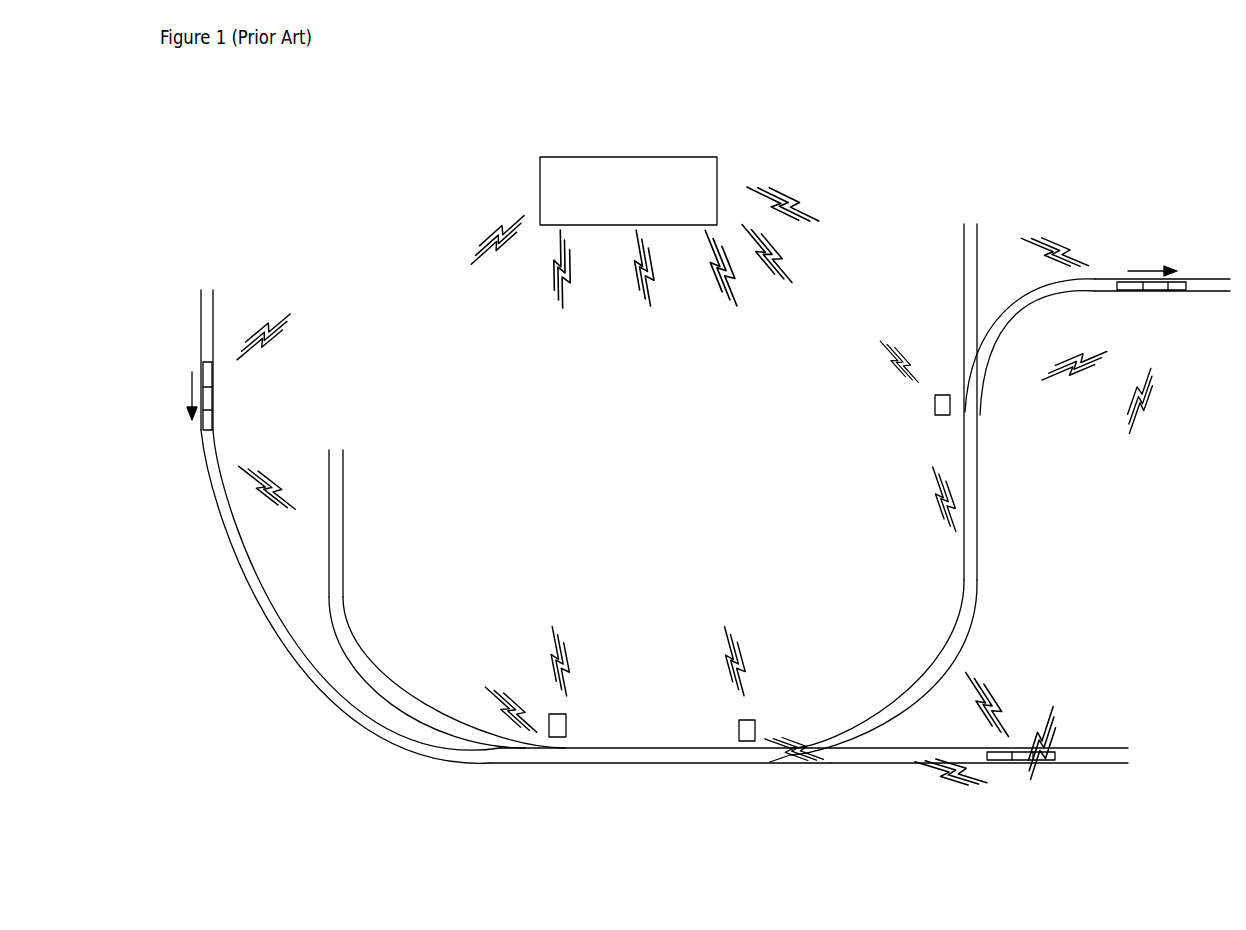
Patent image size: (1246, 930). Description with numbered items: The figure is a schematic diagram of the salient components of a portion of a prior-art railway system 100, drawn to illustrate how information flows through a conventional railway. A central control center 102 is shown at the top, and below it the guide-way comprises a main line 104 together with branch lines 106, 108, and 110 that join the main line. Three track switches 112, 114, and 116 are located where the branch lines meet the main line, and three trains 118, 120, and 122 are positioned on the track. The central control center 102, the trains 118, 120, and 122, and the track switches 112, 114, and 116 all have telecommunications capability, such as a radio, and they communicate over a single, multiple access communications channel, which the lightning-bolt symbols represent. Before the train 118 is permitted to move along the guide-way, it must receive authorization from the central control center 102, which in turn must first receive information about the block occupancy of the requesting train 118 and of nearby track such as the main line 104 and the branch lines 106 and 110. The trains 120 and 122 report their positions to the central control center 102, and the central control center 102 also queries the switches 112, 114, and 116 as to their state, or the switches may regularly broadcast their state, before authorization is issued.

The railway system 100 is at (987, 83).
The central control center 102 is at (659, 216).
The main line 104 is at (257, 595).
The branch line 106 is at (346, 497).
The branch line 108 is at (1100, 748).
The branch line 110 is at (1213, 277).
The track switch 112 is at (567, 720).
The track switch 114 is at (738, 722).
The track switch 116 is at (935, 413).
The train 118 is at (1023, 760).
The train 120 is at (1162, 290).
The train 122 is at (212, 417).